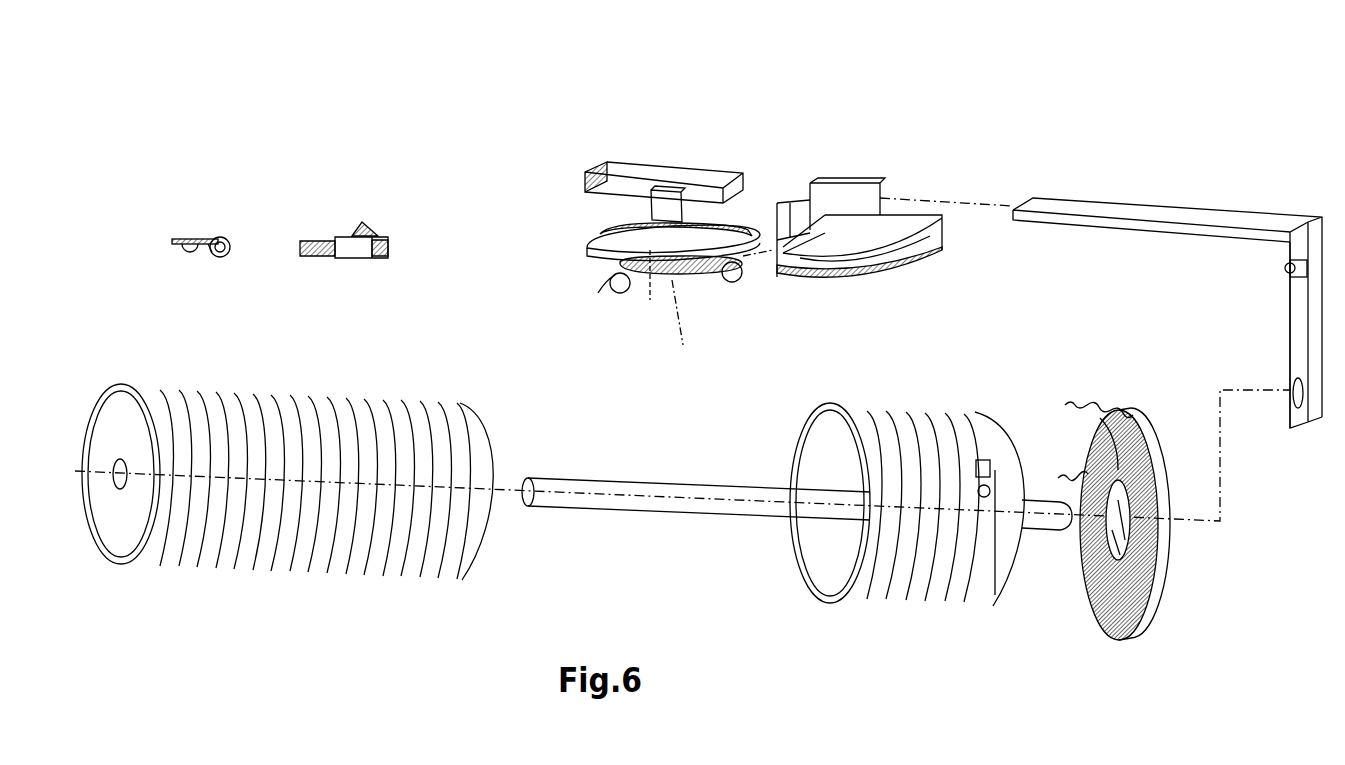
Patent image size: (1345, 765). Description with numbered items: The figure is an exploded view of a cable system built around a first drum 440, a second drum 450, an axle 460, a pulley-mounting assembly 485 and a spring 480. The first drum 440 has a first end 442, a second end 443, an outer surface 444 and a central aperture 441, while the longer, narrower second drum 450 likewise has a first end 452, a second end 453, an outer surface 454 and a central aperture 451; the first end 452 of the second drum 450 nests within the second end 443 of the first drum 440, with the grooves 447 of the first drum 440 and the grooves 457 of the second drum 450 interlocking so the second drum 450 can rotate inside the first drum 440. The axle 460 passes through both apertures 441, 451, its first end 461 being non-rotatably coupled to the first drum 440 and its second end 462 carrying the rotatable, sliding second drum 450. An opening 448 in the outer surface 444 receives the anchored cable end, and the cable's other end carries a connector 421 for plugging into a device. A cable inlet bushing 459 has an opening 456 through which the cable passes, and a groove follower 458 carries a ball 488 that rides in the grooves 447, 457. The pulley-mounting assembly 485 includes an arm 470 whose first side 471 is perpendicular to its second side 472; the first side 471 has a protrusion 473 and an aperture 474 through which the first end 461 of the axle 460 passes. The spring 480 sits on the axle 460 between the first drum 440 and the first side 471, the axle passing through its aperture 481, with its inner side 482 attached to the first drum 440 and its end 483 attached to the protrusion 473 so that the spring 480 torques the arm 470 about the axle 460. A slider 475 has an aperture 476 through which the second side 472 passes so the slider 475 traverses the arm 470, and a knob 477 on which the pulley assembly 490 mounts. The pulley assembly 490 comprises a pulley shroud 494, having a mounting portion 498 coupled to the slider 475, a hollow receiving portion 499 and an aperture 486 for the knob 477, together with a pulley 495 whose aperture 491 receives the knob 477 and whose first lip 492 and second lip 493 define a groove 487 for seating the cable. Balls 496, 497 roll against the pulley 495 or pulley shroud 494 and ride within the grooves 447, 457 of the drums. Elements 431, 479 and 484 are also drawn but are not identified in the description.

The connector 421 is at (372, 225).
The flange block 431 is at (981, 462).
The first drum 440 is at (904, 538).
The aperture 441 is at (1020, 530).
The first end 442 is at (990, 600).
The second end 443 is at (806, 596).
The outer surface 444 is at (882, 610).
The grooves 447 is at (900, 425).
The opening 448 is at (990, 486).
The second drum 450 is at (293, 481).
The aperture 451 is at (112, 520).
The first end 452 is at (465, 400).
The second end 453 is at (125, 385).
The outer surface 454 is at (296, 412).
The opening 456 is at (230, 252).
The grooves 457 is at (215, 560).
The groove follower 458 is at (176, 239).
The cable inlet bushing 459 is at (226, 240).
The axle 460 is at (802, 492).
The first end 461 is at (1047, 522).
The second end 462 is at (549, 478).
The arm 470 is at (1172, 293).
The first side 471 is at (1302, 321).
The second side 472 is at (1136, 200).
The protrusion 473 is at (1288, 265).
The aperture 474 is at (1296, 408).
The slider 475 is at (644, 137).
The aperture 476 is at (590, 178).
The knob 477 is at (656, 210).
The wire 479 is at (1070, 476).
The spring 480 is at (1141, 536).
The aperture 481 is at (1112, 625).
The inner side 482 is at (1152, 566).
The end 483 is at (1112, 412).
The wire 484 is at (1080, 405).
The pulley-mounting assembly 485 is at (1082, 118).
The aperture 486 is at (796, 198).
The groove 487 is at (650, 280).
The ball 488 is at (192, 256).
The pulley assembly 490 is at (746, 238).
The aperture 491 is at (684, 228).
The first lip 492 is at (590, 249).
The second lip 493 is at (608, 284).
The pulley shroud 494 is at (920, 240).
The pulley 495 is at (618, 264).
The ball 496 is at (742, 280).
The ball 497 is at (614, 297).
The mounting portion 498 is at (862, 184).
The receiving portion 499 is at (918, 258).